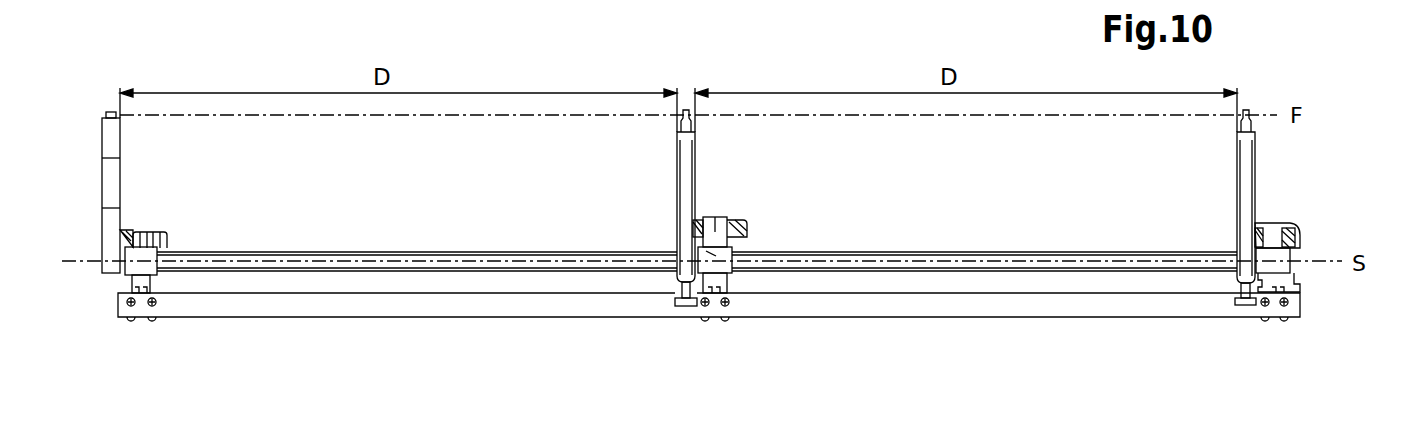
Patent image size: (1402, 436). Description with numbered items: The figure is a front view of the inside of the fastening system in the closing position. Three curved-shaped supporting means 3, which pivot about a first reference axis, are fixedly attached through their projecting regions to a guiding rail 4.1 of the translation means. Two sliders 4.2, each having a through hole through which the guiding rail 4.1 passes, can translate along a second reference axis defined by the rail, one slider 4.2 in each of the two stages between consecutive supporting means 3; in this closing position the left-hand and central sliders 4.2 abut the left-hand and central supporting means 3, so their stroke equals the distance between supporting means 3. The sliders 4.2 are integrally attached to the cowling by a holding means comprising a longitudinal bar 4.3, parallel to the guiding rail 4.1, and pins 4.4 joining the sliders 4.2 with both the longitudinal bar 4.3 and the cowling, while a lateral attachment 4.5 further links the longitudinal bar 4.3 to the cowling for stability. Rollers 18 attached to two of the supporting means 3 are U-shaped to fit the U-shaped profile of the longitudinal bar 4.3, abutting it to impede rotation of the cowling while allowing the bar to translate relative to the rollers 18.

The supporting means 3 is at (110, 178).
The guiding rail 4.1 is at (1033, 252).
The slider 4.2 is at (137, 253).
The longitudinal bar 4.3 is at (1002, 305).
The pin 4.4 is at (143, 237).
The lateral attachment 4.5 is at (1278, 253).
The roller 18 is at (683, 313).